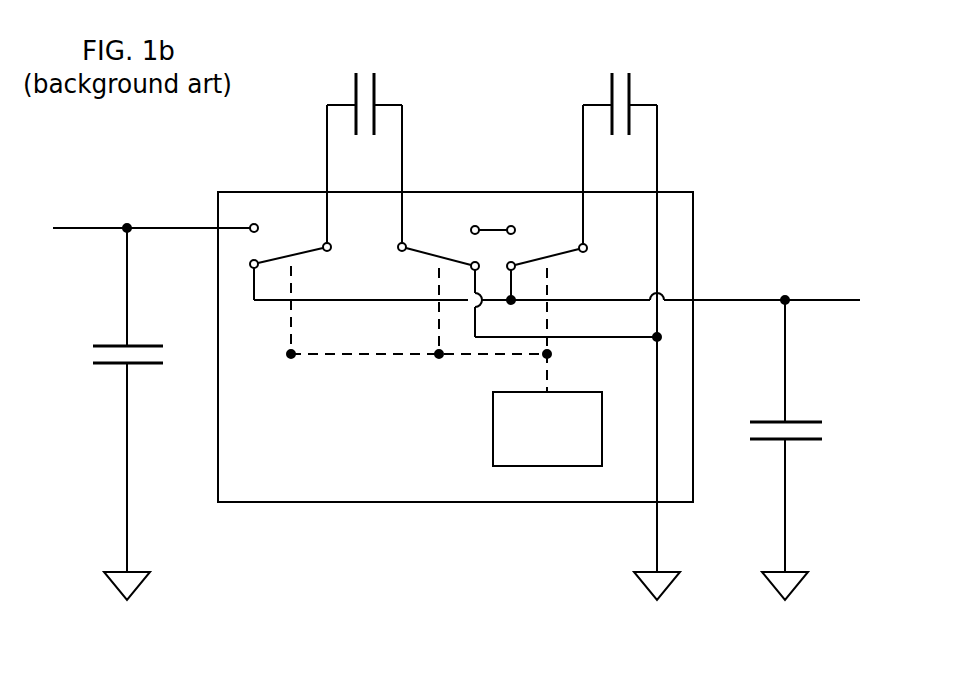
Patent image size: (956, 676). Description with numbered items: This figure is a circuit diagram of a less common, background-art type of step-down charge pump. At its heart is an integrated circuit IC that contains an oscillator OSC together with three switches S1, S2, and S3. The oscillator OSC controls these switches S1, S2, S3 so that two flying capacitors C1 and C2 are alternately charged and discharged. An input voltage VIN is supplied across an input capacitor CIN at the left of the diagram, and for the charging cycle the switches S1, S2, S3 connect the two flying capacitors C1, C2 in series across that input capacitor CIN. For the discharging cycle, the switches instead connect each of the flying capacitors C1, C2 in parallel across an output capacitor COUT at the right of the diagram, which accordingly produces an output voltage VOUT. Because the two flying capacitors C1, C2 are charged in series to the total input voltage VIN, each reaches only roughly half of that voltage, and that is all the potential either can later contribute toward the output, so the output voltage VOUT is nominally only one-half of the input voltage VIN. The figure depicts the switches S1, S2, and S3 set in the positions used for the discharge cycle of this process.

The integrated circuit IC is at (455, 347).
The input voltage VIN is at (148, 210).
The input capacitor CIN is at (100, 414).
The flying capacitor C1 is at (364, 136).
The flying capacitor C2 is at (631, 315).
The switch S1 is at (359, 249).
The switch S2 is at (527, 267).
The switch S3 is at (547, 251).
The output voltage VOUT is at (682, 284).
The output capacitor COUT is at (816, 450).
The oscillator OSC is at (444, 366).